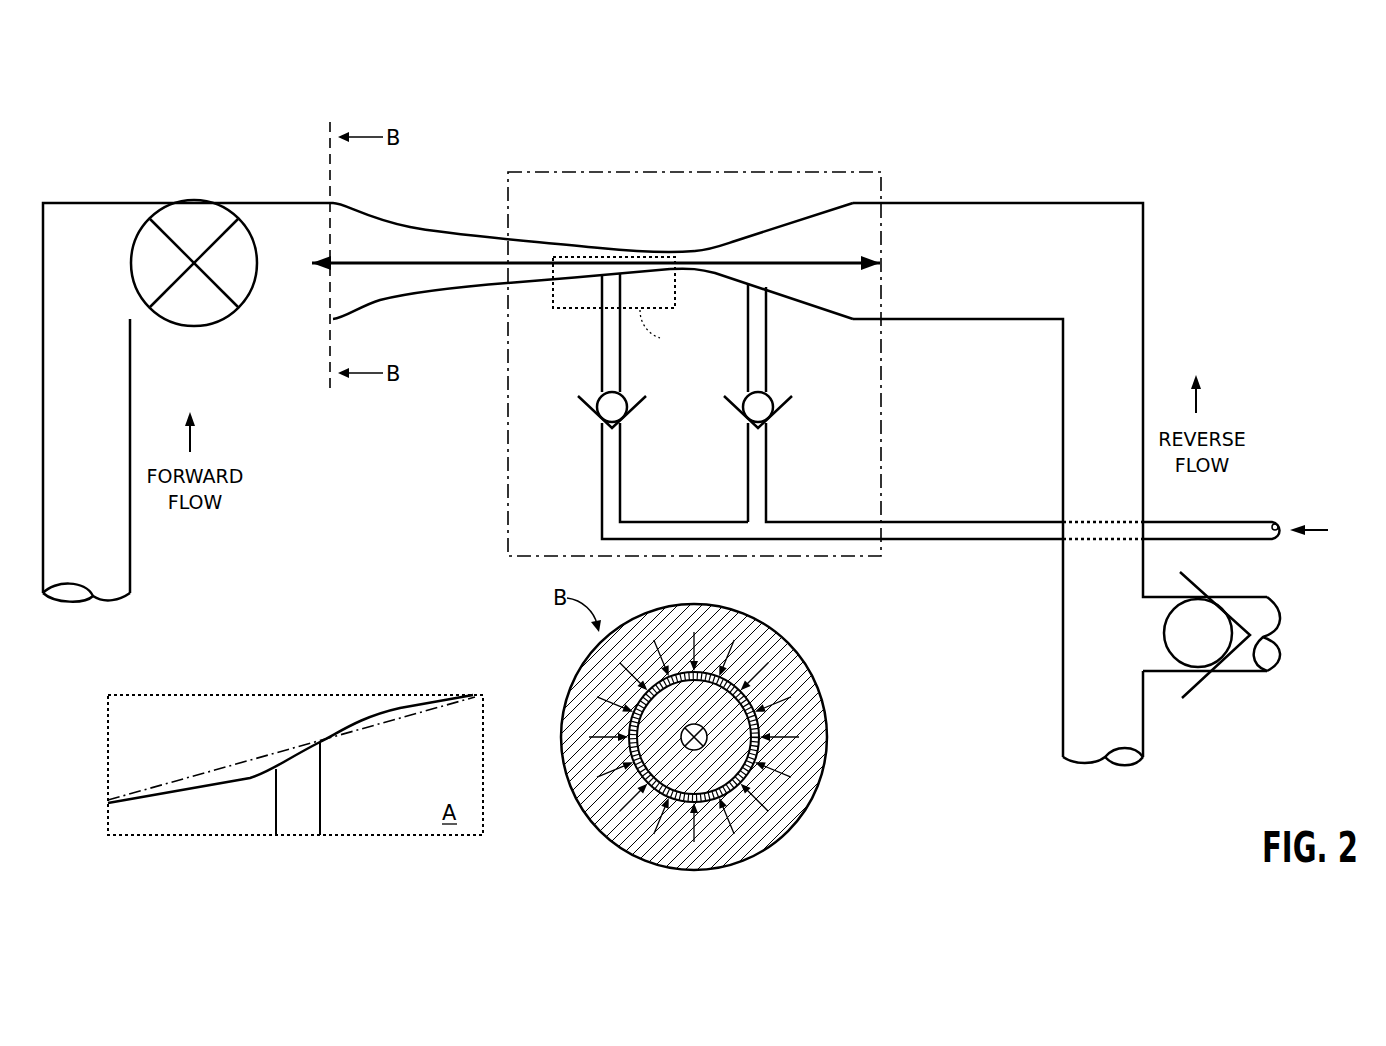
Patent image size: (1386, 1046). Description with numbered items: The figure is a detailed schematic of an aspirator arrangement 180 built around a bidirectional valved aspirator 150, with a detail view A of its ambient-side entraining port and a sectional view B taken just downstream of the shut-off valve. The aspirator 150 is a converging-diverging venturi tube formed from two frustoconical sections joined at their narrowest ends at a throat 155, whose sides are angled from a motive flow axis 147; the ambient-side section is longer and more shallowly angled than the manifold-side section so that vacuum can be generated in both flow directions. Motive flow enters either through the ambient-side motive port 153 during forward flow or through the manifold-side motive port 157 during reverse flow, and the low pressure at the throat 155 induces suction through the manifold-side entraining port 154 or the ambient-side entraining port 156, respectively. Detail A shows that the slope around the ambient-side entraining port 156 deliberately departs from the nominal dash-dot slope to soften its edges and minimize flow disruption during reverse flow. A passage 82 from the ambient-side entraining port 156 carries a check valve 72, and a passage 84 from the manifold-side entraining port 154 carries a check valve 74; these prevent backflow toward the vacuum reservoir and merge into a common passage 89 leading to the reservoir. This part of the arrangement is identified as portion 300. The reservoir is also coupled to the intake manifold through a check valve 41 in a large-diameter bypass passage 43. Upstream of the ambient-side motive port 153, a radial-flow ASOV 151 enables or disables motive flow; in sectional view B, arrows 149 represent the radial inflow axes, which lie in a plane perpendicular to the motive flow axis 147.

The aspirator arrangement 180 is at (148, 84).
The aspirator 150 is at (668, 463).
The ASOV 151 is at (210, 202).
The motive flow axis 147 is at (412, 262).
The ambient-side motive port 153 is at (305, 275).
The manifold-side motive port 157 is at (925, 275).
The throat 155 is at (693, 246).
The ambient-side entraining port 156 is at (613, 275).
The manifold-side entraining port 154 is at (749, 285).
The check valve 72 is at (630, 404).
The check valve 74 is at (776, 404).
The passage 82 is at (600, 451).
The passage 84 is at (746, 451).
The portion 300 is at (886, 398).
The common passage 89 is at (940, 522).
The check valve 41 is at (1197, 583).
The bypass passage 43 is at (1237, 672).
The arrows 149 is at (785, 742).